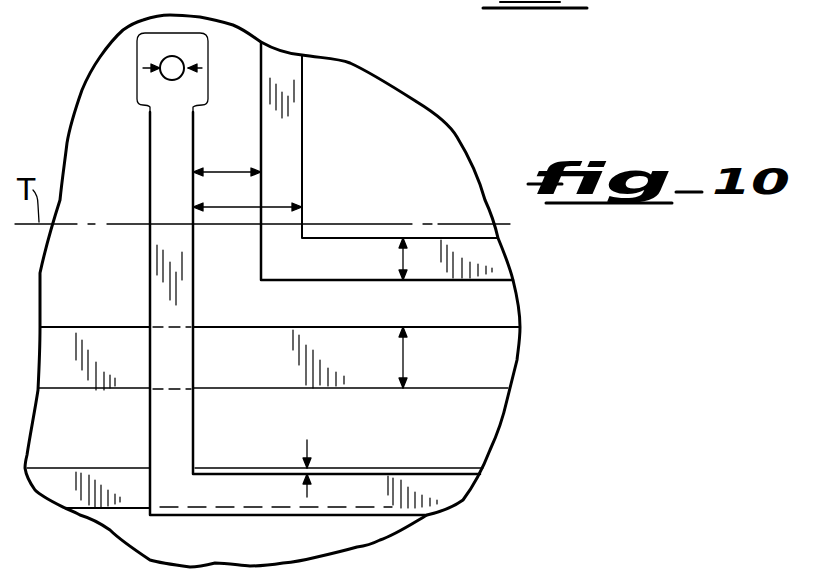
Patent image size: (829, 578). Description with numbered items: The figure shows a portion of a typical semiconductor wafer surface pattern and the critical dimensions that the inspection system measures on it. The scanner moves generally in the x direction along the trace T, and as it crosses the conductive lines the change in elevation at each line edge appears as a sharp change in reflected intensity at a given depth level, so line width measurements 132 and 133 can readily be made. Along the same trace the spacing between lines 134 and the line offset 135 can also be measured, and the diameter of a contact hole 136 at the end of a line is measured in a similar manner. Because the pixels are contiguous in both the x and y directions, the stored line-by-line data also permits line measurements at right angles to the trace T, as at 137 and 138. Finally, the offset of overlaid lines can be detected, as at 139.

The line width measurement 132 is at (193, 133).
The line width measurement 133 is at (261, 133).
The spacing between lines 134 is at (233, 167).
The line offset 135 is at (237, 212).
The contact hole diameter 136 is at (179, 60).
The line measurement at right angles to trace 137 is at (400, 258).
The line measurement at right angles to trace 138 is at (410, 355).
The offset of overlaid lines 139 is at (312, 466).